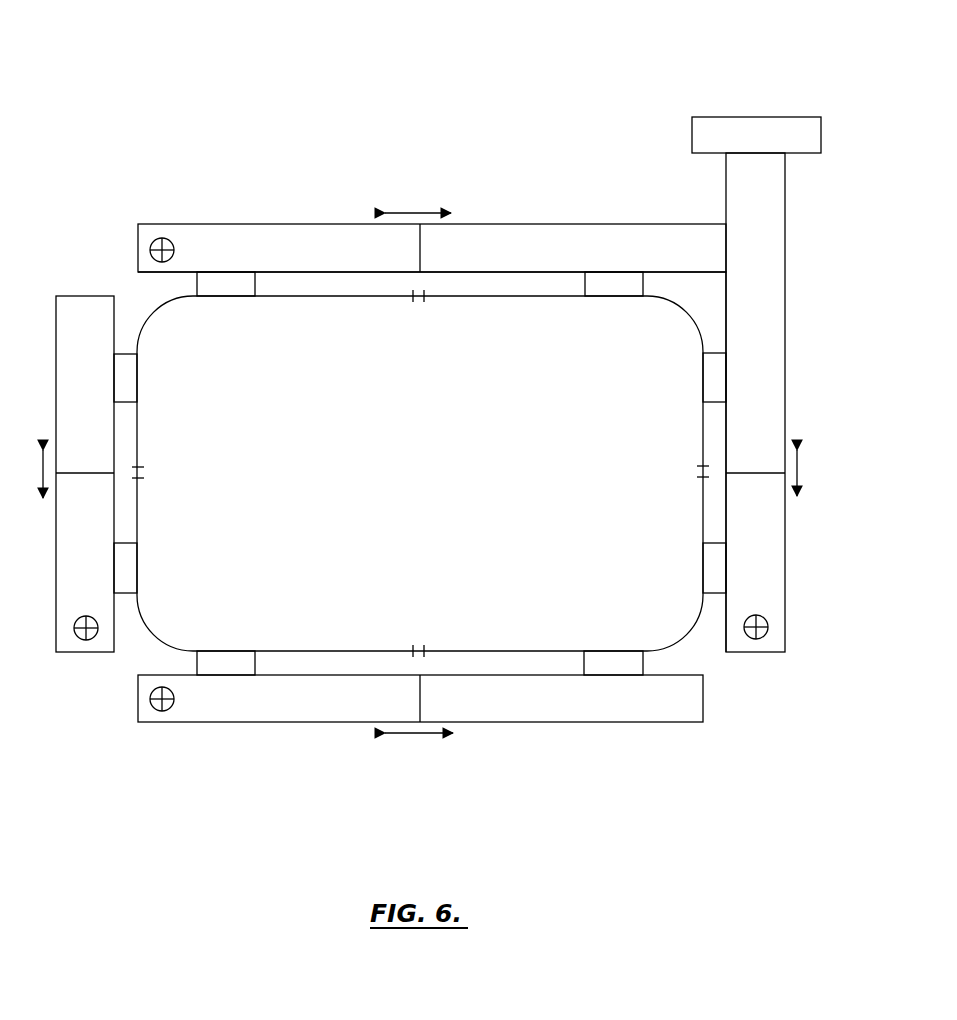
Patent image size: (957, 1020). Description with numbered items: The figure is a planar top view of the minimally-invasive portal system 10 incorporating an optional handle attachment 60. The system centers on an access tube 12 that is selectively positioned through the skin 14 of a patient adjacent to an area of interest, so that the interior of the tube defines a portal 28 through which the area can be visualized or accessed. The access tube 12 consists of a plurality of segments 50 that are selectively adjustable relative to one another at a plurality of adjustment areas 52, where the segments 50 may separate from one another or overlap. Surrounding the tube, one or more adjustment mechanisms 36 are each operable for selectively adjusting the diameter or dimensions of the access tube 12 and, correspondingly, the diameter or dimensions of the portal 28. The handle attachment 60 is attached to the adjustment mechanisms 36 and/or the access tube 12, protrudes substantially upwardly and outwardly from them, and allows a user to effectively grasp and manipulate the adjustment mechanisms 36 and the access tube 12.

The minimally-invasive portal system 10 is at (833, 302).
The access tube 12 is at (602, 295).
The skin 14 is at (80, 770).
The portal 28 is at (433, 490).
The adjustment mechanism 36 is at (222, 225).
The segment 50 is at (280, 295).
The adjustment area 52 is at (423, 278).
The handle attachment 60 is at (822, 133).